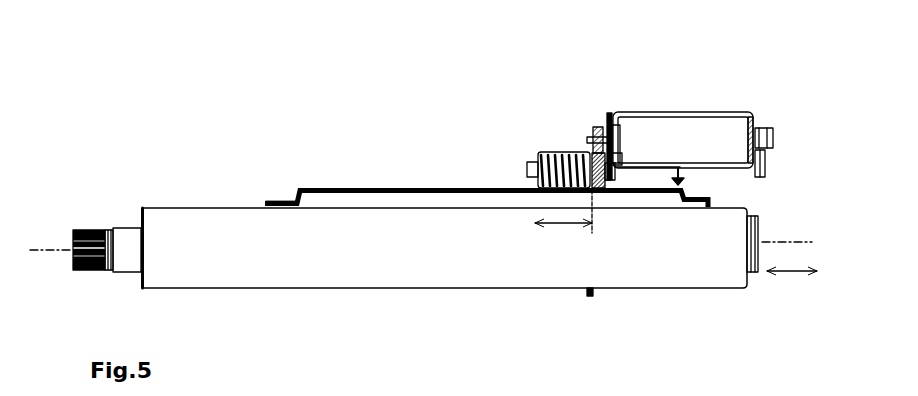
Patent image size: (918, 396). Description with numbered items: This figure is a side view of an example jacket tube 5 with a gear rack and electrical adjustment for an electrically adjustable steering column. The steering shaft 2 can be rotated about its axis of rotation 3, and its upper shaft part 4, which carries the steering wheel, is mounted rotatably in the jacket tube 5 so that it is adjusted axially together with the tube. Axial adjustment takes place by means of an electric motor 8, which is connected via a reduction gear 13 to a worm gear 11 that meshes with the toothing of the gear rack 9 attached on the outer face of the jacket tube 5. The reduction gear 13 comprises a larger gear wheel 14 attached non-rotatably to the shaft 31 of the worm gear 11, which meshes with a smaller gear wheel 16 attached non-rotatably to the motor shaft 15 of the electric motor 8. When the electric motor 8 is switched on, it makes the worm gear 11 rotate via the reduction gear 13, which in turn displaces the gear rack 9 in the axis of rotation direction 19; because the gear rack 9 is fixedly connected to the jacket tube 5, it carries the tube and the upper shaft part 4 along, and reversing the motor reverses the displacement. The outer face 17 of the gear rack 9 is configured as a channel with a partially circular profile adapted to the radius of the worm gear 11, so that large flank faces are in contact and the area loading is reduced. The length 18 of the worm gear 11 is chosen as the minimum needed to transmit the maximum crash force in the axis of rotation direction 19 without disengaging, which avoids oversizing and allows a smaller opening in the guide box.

The steering shaft 2 is at (68, 270).
The axis of rotation 3 is at (53, 248).
The upper shaft part 4 is at (123, 240).
The jacket tube 5 is at (203, 227).
The electric motor 8 is at (693, 130).
The gear rack 9 is at (320, 180).
The worm gear 11 is at (563, 148).
The reduction gear 13 is at (595, 110).
The larger gear wheel 14 is at (600, 230).
The motor shaft 15 is at (611, 137).
The smaller gear wheel 16 is at (600, 230).
The outer face 17 is at (373, 187).
The length 18 is at (555, 226).
The axis of rotation direction 19 is at (783, 274).
The shaft 31 is at (535, 233).